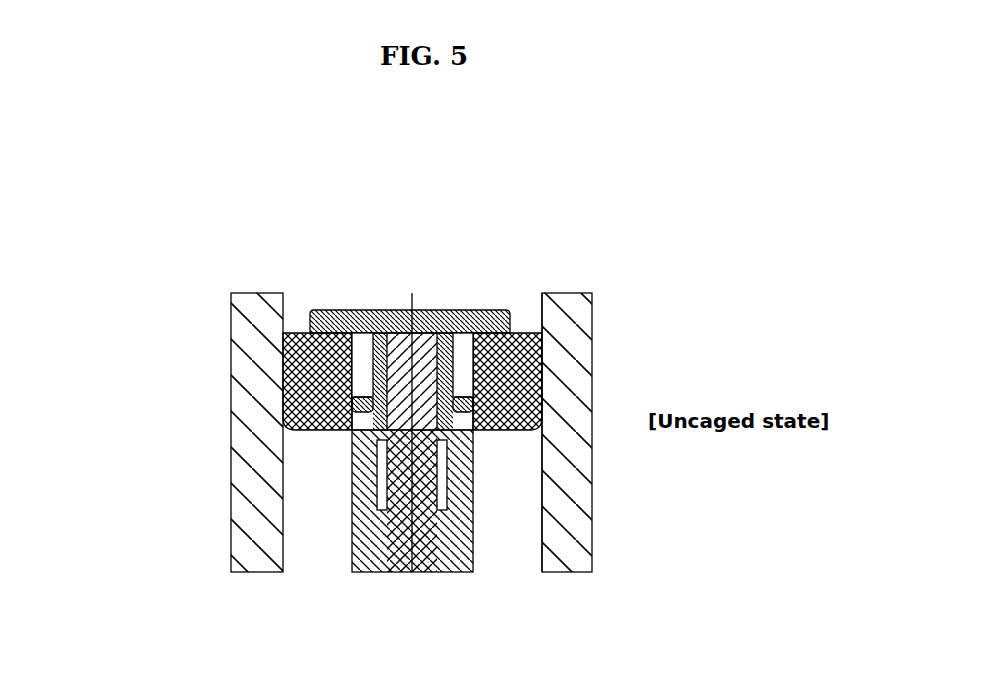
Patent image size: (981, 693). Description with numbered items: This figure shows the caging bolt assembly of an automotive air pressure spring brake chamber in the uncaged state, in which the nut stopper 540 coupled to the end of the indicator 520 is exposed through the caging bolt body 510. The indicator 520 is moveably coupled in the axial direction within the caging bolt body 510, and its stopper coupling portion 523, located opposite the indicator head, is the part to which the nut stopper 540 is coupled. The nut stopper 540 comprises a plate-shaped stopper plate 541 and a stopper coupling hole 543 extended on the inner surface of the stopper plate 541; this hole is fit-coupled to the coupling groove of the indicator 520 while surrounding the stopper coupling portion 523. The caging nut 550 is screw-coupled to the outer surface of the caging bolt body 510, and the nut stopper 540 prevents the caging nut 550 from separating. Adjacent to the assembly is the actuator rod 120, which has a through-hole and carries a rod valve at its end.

The actuator rod 120 is at (592, 375).
The caging bolt body 510 is at (473, 537).
The indicator 520 is at (297, 568).
The stopper coupling portion 523 is at (430, 310).
The nut stopper 540 is at (279, 314).
The stopper plate 541 is at (365, 310).
The stopper coupling hole 543 is at (297, 420).
The caging nut 550 is at (542, 332).